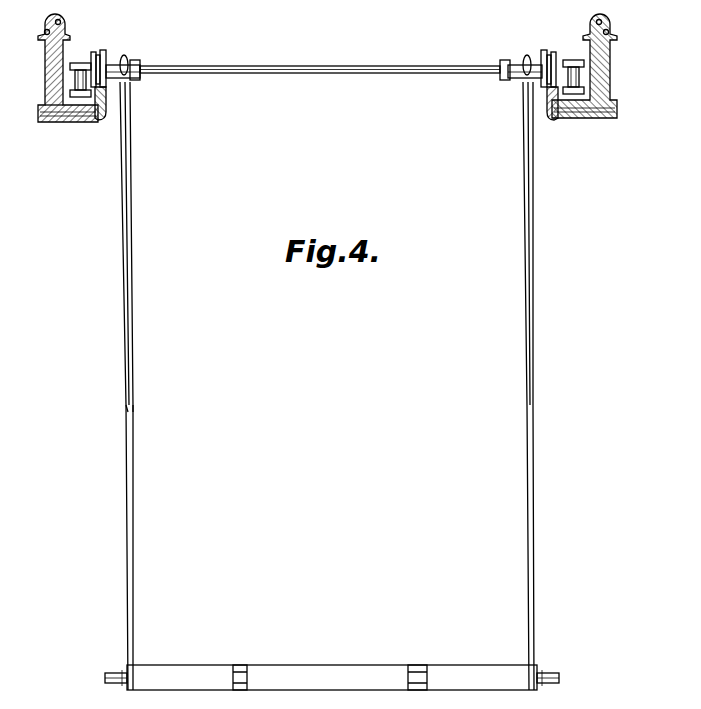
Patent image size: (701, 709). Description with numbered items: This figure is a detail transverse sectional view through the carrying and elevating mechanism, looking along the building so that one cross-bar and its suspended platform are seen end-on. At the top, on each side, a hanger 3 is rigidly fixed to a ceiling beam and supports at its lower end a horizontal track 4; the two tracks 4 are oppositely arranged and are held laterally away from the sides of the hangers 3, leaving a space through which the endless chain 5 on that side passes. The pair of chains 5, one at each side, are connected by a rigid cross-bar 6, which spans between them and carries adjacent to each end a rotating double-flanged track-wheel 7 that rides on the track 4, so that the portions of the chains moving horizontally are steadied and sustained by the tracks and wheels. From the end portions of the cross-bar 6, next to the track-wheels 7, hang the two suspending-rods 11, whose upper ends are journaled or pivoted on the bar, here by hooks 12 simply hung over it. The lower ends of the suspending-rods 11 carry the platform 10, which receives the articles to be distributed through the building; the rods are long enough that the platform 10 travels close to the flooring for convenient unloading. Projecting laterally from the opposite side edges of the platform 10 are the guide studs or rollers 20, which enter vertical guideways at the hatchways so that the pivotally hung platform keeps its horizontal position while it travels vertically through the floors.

The hanger 3 is at (45, 82).
The horizontal track 4 is at (108, 118).
The endless chain 5 is at (80, 64).
The cross-bar 6 is at (320, 62).
The double-flanged track-wheel 7 is at (99, 52).
The platform 10 is at (332, 670).
The suspending-rod 11 is at (338, 386).
The hook 12 is at (124, 55).
The guide stud or roller 20 is at (566, 679).